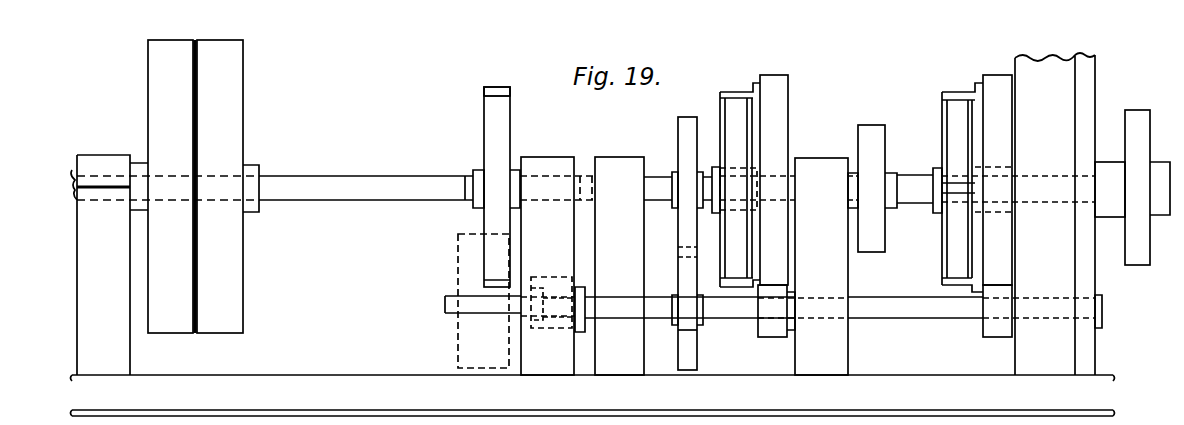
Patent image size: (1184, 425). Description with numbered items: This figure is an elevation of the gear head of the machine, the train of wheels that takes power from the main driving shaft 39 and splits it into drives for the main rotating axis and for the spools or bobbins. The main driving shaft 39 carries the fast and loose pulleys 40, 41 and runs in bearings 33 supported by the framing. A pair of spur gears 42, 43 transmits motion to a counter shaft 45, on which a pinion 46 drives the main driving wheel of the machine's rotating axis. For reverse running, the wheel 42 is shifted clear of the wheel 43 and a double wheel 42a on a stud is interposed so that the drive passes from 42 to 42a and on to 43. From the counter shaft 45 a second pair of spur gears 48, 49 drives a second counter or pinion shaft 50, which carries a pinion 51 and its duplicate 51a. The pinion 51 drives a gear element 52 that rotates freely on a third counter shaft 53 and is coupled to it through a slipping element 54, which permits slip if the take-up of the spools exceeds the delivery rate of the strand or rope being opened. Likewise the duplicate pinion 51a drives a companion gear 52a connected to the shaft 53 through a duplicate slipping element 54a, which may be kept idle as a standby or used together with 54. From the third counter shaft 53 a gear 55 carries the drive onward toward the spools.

The bearing 33 is at (598, 176).
The main driving shaft 39 is at (325, 177).
The fast pulley 40 is at (243, 135).
The loose pulley 41 is at (148, 135).
The spur gear 42 is at (484, 90).
The double wheel 42a is at (458, 258).
The spur gear 43 is at (511, 136).
The counter shaft 45 is at (628, 200).
The pinion 46 is at (885, 223).
The spur gear 48 is at (688, 255).
The spur gear 49 is at (678, 345).
The second counter or pinion shaft 50 is at (604, 297).
The pinion 51 is at (758, 325).
The duplicate pinion 51a is at (983, 330).
The gear element 52 is at (788, 139).
The companion gear 52a is at (985, 120).
The third counter shaft 53 is at (805, 176).
The slipping element 54 is at (728, 108).
The duplicate slipping element 54a is at (952, 112).
The gear 55 is at (1125, 241).